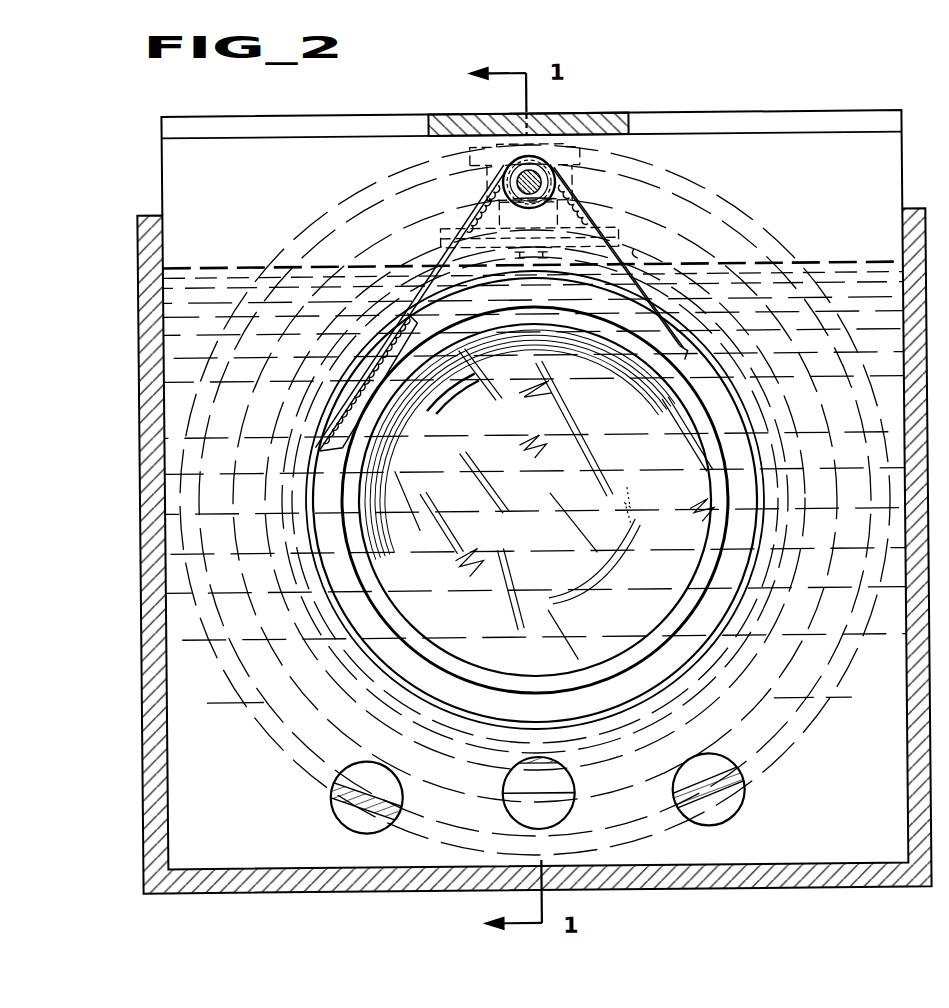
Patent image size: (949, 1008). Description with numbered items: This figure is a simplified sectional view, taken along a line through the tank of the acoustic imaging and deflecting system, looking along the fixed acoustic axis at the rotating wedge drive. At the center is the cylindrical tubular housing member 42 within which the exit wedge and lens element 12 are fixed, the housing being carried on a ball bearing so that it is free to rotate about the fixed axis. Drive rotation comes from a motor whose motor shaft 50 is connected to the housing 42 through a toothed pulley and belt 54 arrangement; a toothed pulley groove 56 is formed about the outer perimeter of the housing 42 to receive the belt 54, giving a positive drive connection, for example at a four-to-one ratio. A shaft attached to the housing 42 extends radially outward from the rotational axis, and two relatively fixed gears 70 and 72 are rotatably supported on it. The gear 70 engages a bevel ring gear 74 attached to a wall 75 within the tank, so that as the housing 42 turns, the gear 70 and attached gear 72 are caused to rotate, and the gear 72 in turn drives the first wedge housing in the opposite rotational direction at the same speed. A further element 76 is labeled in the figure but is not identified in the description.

The lens element 12 is at (646, 429).
The tubular housing member 42 is at (660, 368).
The motor shaft 50 is at (522, 184).
The belt 54 is at (587, 197).
The toothed pulley groove 56 is at (358, 395).
The gear 70 is at (600, 160).
The gear 72 is at (642, 252).
The bevel ring gear 74 is at (478, 158).
The wall 75 is at (392, 228).
The base support 76 is at (660, 233).